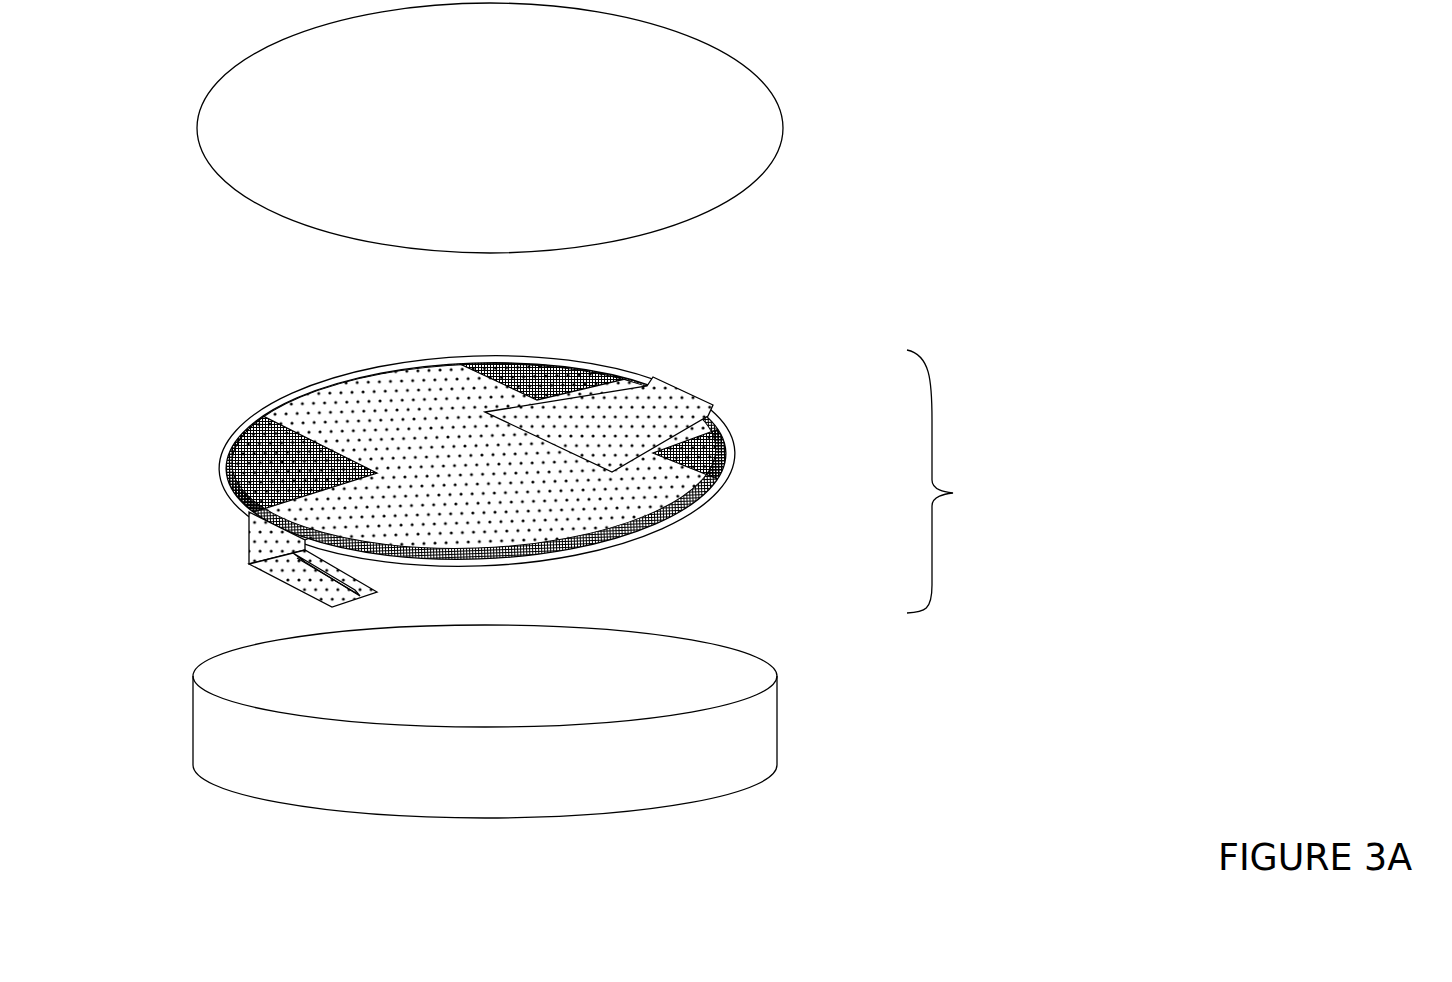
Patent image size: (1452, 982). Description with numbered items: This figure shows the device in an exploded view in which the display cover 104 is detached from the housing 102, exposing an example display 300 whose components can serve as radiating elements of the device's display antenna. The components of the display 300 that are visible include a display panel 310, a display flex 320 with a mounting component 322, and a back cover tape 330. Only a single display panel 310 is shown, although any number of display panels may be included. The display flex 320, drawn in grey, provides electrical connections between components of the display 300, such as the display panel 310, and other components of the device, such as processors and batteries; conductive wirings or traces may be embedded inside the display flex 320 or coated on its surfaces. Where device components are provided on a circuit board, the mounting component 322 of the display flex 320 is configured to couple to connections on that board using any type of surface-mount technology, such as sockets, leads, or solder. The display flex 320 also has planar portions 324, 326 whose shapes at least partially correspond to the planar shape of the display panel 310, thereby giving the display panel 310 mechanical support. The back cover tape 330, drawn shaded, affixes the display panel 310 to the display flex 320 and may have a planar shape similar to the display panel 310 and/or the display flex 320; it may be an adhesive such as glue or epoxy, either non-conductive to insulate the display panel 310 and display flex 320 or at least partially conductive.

The display cover 104 is at (722, 83).
The housing 102 is at (730, 740).
The display 300 is at (952, 481).
The display panel 310 is at (723, 430).
The display flex 320 is at (655, 412).
The mounting component 322 is at (283, 580).
The planar portion 324 is at (577, 403).
The planar portion 326 is at (362, 412).
The back cover tape 330 is at (735, 473).